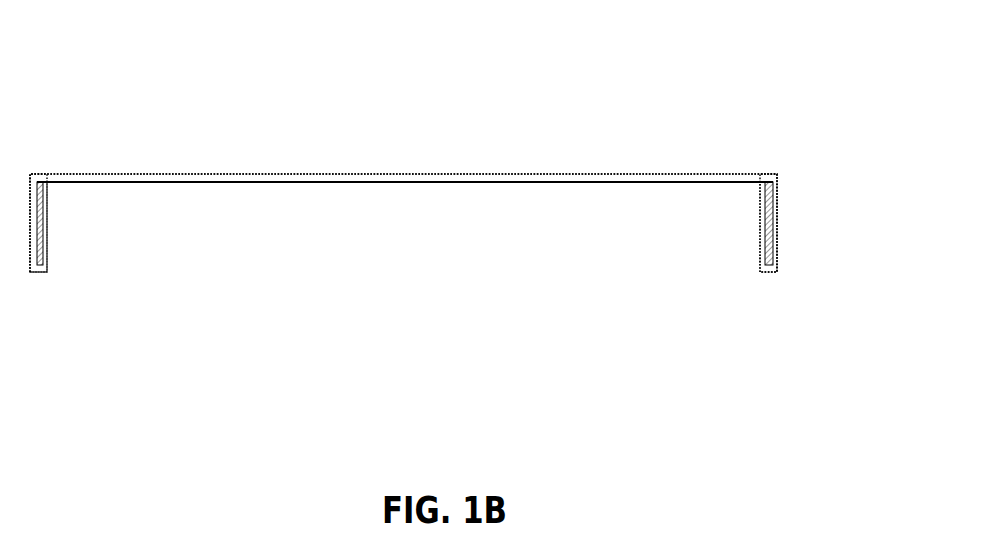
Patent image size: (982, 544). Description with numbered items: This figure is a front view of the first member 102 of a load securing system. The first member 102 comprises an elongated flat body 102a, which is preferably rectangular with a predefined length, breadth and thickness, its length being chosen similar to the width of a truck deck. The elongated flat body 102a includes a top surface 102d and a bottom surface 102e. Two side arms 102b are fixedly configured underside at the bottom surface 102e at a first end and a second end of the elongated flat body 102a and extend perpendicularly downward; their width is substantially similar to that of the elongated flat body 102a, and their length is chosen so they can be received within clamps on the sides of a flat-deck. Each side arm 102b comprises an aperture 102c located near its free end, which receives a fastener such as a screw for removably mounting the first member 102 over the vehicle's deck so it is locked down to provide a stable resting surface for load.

The first member 102 is at (628, 130).
The elongated flat body 102a is at (358, 176).
The side arms 102b is at (47, 212).
The aperture 102c is at (45, 247).
The top surface 102d is at (165, 174).
The bottom surface 102e is at (506, 183).